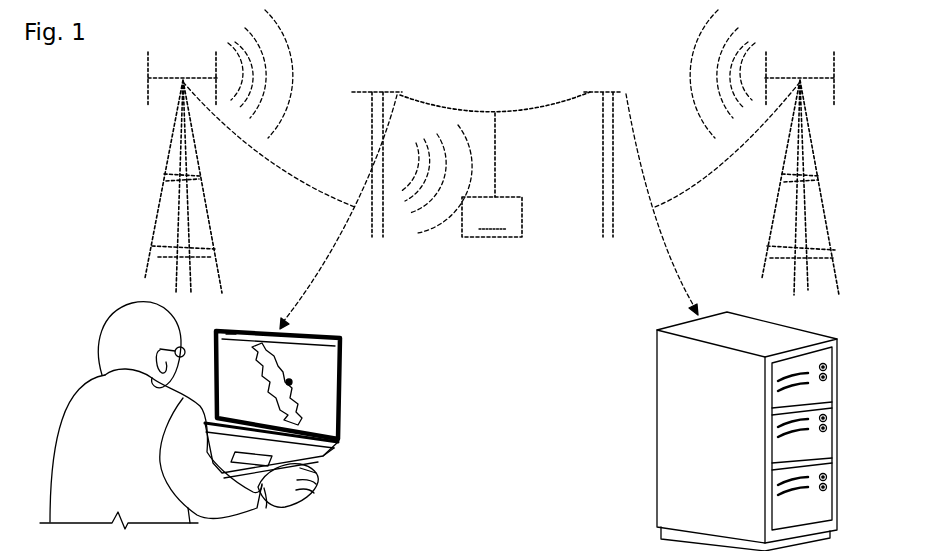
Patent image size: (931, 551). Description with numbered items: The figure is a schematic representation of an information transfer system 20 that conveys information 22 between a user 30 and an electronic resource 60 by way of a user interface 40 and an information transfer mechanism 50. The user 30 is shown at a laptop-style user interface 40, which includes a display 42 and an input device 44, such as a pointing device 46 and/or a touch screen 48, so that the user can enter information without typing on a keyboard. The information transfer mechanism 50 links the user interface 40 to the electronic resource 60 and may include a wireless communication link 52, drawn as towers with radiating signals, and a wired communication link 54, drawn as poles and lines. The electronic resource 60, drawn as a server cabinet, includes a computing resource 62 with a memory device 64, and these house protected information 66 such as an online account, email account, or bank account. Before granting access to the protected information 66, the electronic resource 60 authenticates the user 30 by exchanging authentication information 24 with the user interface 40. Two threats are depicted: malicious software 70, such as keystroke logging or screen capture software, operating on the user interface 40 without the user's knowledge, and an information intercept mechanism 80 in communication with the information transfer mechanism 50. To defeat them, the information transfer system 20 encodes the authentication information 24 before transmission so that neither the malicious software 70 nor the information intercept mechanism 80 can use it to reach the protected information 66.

The information transfer system 20 is at (80, 109).
The information 22 is at (310, 294).
The authentication information 24 is at (330, 262).
The user 30 is at (70, 378).
The user interface 40 is at (291, 399).
The display 42 is at (322, 372).
The input device 44 is at (337, 457).
The pointing device 46 is at (328, 472).
The touch screen 48 is at (343, 444).
The information transfer mechanism 50 is at (479, 283).
The wireless communication link 52 is at (164, 78).
The wired communication link 54 is at (518, 111).
The electronic resource 60 is at (715, 421).
The computing resource 62 is at (653, 420).
The memory device 64 is at (653, 490).
The protected information 66 is at (675, 382).
The malicious software 70 is at (233, 327).
The information intercept mechanism 80 is at (461, 181).